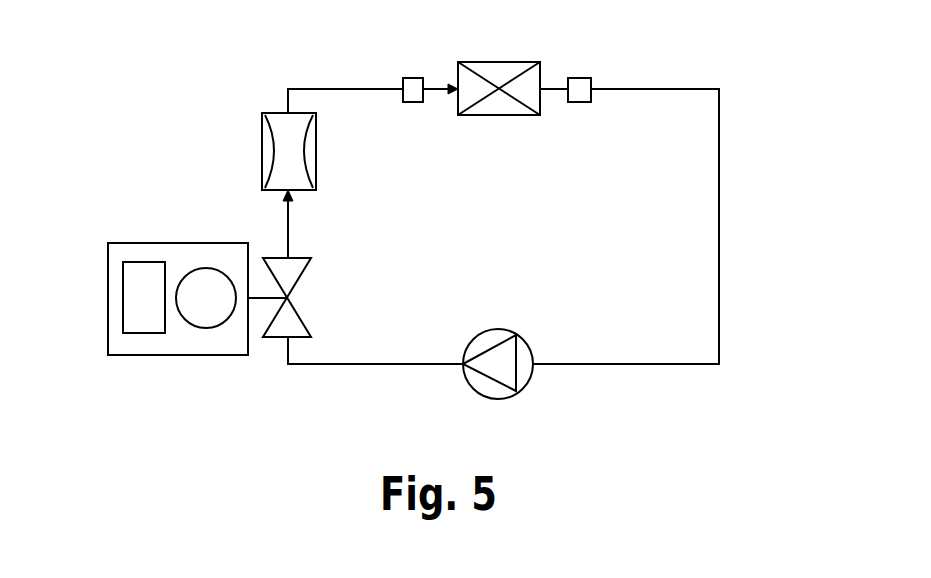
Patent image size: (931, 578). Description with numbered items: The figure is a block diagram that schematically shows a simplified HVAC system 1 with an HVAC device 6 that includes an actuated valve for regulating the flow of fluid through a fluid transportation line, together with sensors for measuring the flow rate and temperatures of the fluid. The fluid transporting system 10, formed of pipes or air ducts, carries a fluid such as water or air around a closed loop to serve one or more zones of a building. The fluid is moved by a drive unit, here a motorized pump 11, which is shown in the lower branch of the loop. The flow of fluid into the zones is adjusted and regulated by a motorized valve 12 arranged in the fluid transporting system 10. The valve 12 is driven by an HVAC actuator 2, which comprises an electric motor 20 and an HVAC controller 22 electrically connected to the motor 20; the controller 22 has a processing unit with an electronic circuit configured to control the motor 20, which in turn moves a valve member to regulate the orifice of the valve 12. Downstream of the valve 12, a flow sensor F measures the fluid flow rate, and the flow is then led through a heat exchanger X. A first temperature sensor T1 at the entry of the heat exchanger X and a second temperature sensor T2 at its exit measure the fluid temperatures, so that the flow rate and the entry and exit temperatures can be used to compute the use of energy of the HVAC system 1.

The HVAC system 1 is at (291, 392).
The HVAC actuator 2 is at (182, 343).
The HVAC device 6 is at (130, 373).
The fluid transporting system 10 is at (721, 219).
The pump 11 is at (521, 357).
The valve 12 is at (293, 322).
The electric motor 20 is at (206, 298).
The HVAC controller 22 is at (143, 275).
The flow sensor F is at (262, 154).
The temperature sensor T1 is at (414, 78).
The temperature sensor T2 is at (579, 78).
The heat exchanger X is at (499, 114).